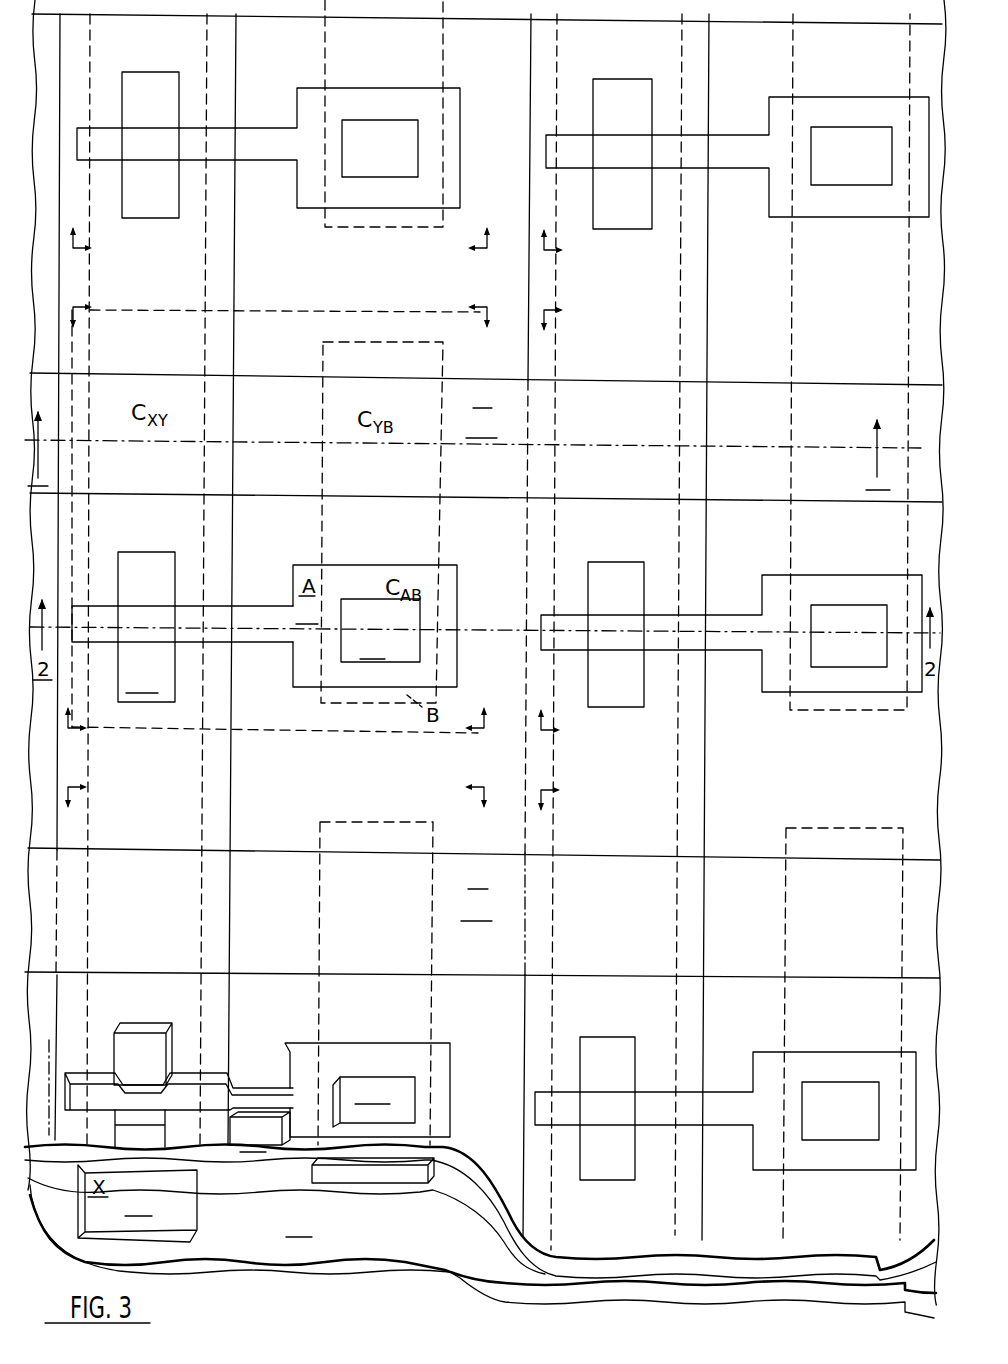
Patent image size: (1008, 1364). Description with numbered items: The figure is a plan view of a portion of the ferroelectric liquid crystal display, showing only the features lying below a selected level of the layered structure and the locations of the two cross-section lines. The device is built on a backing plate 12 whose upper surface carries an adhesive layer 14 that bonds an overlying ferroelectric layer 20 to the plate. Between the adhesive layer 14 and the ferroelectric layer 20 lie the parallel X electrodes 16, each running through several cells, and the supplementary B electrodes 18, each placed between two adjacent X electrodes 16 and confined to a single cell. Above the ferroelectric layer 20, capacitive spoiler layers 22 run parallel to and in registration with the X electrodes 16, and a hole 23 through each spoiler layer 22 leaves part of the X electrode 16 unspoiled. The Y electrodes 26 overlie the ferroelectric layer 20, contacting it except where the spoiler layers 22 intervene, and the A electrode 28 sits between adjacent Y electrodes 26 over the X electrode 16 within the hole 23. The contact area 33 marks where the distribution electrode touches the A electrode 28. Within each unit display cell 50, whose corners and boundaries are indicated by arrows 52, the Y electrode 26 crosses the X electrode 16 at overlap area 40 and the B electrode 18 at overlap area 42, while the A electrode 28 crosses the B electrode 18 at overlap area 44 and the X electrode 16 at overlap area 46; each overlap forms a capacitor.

The backing plate 12 is at (482, 1248).
The adhesive layer 14 is at (255, 1172).
The X electrode 16 is at (176, 790).
The supplementary electrode 18 is at (402, 1162).
The ferroelectric layer 20 is at (204, 852).
The capacitive spoiler layer 22 is at (217, 770).
The hole 23 is at (143, 590).
The Y electrode 26 is at (407, 572).
The A electrode 28 is at (309, 614).
The contact area 33 is at (376, 863).
The overlap area XY 40 is at (123, 387).
The overlap area YB 42 is at (345, 413).
The overlap area AB 44 is at (350, 580).
The overlap area XA 46 is at (163, 618).
The unit display cell 50 is at (286, 330).
The arrows 52 is at (313, 519).